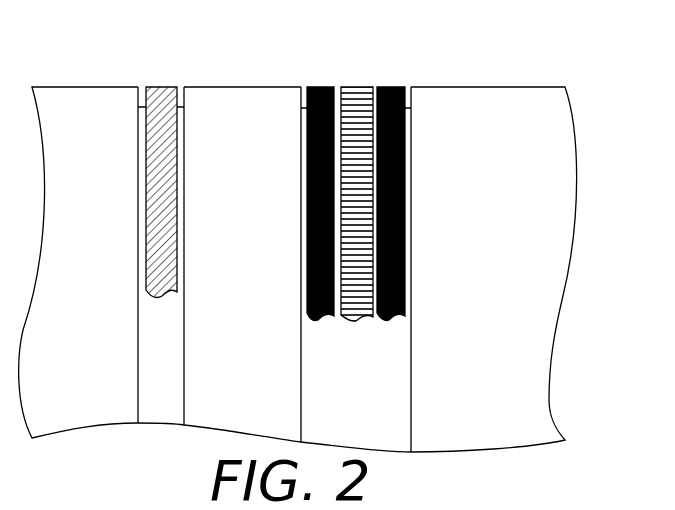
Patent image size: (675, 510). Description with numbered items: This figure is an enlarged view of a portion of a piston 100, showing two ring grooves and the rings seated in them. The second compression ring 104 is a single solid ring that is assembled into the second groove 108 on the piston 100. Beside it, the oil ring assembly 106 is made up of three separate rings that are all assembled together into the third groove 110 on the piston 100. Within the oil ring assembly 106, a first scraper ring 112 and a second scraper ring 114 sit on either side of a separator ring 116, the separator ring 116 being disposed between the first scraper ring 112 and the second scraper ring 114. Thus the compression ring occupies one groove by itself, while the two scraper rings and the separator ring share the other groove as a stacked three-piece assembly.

The piston 100 is at (560, 152).
The second compression ring 104 is at (165, 100).
The oil ring assembly 106 is at (365, 184).
The second groove 108 is at (160, 365).
The third groove 110 is at (320, 374).
The first scraper ring 112 is at (321, 85).
The second scraper ring 114 is at (391, 85).
The separator ring 116 is at (360, 303).